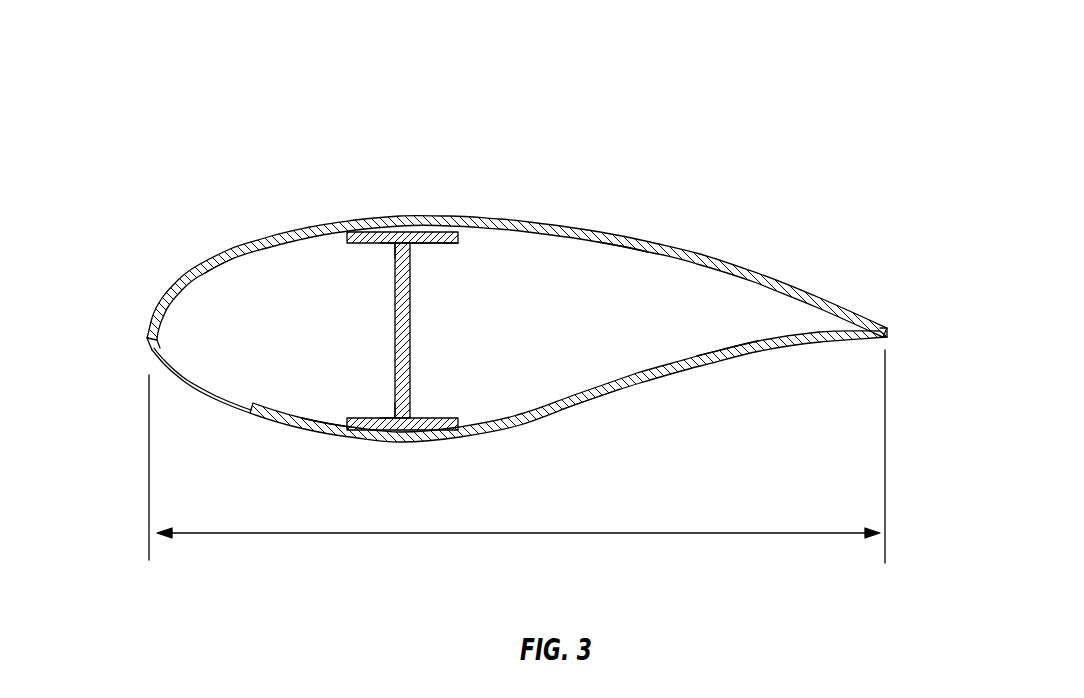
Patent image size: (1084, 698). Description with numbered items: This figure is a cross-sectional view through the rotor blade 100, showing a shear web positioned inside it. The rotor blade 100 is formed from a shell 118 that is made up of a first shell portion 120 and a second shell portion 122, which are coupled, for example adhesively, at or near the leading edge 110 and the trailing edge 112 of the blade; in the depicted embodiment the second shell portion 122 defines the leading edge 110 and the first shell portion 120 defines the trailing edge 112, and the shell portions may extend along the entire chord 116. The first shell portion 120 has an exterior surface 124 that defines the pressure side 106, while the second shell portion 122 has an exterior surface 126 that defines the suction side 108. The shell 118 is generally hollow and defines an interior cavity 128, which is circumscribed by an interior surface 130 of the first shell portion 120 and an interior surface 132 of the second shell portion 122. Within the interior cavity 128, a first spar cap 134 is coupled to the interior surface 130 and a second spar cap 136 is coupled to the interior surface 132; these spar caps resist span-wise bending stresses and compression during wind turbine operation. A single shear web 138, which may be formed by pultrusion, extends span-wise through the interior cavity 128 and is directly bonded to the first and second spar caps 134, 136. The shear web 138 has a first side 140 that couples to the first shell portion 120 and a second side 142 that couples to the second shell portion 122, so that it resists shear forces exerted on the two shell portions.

The rotor blade 100 is at (502, 258).
The pressure side 106 is at (655, 379).
The suction side 108 is at (572, 225).
The leading edge 110 is at (150, 334).
The trailing edge 112 is at (887, 328).
The chord 116 is at (632, 535).
The shell 118 is at (502, 319).
The first shell portion 120 is at (290, 466).
The second shell portion 122 is at (385, 276).
The exterior surface 124 is at (590, 400).
The exterior surface 126 is at (430, 232).
The interior cavity 128 is at (240, 300).
The interior surface 130 is at (710, 352).
The interior surface 132 is at (628, 252).
The first spar cap 134 is at (432, 416).
The second spar cap 136 is at (430, 245).
The shear web 138 is at (393, 354).
The first side 140 is at (380, 405).
The second side 142 is at (372, 253).